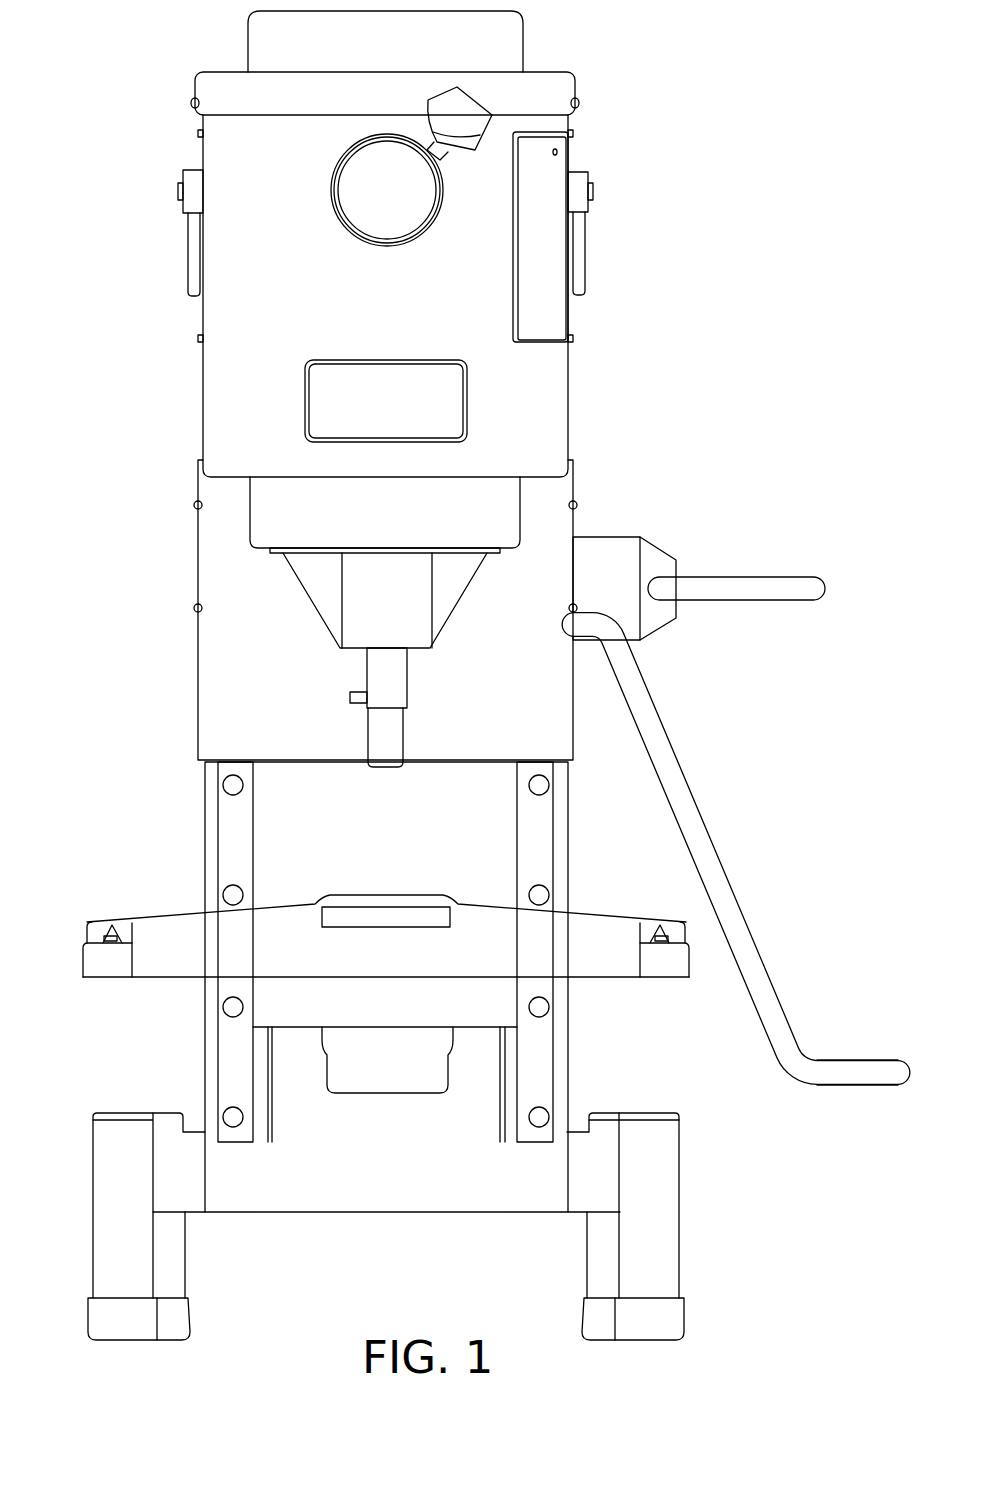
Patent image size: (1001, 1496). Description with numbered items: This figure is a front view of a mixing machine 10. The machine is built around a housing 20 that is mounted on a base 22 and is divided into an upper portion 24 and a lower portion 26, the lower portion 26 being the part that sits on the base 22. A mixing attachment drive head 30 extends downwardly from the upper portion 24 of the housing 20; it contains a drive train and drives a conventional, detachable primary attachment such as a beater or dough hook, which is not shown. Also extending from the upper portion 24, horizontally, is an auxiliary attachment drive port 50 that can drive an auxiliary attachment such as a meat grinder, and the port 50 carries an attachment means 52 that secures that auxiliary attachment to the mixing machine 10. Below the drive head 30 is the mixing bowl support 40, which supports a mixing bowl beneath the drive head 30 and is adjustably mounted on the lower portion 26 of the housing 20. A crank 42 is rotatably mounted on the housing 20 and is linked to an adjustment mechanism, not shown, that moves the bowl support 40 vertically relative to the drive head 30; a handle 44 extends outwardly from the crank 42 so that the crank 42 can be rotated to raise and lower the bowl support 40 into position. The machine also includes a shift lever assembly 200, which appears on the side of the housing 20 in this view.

The mixing machine 10 is at (465, 675).
The housing 20 is at (313, 613).
The base 22 is at (675, 1242).
The upper portion 24 is at (424, 244).
The lower portion 26 is at (205, 858).
The mixing attachment drive head 30 is at (417, 607).
The mixing bowl support 40 is at (83, 957).
The crank 42 is at (736, 855).
The handle 44 is at (853, 1063).
The auxiliary attachment drive port 50 is at (428, 226).
The attachment means 52 is at (467, 105).
The shift lever assembly 200 is at (735, 769).